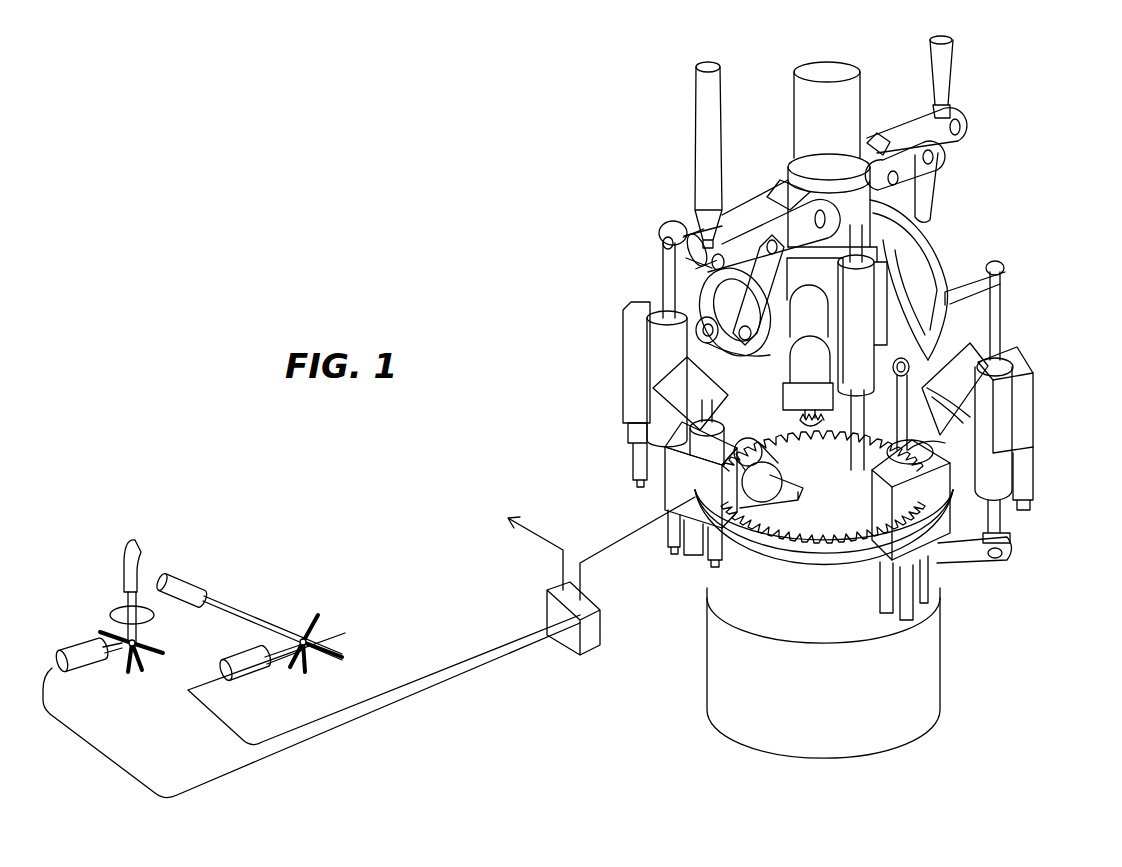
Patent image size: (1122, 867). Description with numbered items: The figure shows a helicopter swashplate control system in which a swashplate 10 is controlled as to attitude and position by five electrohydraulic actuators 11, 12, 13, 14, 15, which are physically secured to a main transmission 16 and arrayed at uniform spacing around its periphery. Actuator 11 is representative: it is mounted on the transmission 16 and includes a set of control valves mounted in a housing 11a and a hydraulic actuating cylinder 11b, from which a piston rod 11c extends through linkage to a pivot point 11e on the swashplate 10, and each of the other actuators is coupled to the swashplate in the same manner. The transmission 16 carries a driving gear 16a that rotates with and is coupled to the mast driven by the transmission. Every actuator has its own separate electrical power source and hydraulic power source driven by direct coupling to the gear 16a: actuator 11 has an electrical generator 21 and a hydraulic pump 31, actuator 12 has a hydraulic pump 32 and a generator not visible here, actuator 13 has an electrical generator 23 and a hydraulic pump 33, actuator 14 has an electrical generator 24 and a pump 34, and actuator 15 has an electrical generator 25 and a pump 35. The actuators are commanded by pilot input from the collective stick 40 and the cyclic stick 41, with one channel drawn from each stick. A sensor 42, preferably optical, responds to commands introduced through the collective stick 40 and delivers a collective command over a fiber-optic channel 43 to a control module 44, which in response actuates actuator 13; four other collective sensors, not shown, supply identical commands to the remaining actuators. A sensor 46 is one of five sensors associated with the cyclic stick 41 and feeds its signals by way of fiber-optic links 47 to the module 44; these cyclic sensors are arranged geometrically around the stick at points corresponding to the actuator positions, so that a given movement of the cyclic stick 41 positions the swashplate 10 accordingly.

The swashplate 10 is at (950, 278).
The electrohydraulic actuator 11 is at (1049, 350).
The housing 11a is at (1031, 408).
The hydraulic actuating cylinder 11b is at (993, 470).
The piston rod 11c is at (1003, 365).
The pivot point 11e is at (1007, 278).
The electrohydraulic actuator 12 is at (931, 525).
The electrohydraulic actuator 13 is at (700, 484).
The electrohydraulic actuator 14 is at (625, 370).
The electrohydraulic actuator 15 is at (880, 247).
The main transmission 16 is at (846, 695).
The driving gear 16a is at (805, 542).
The electrical generator 21 is at (937, 428).
The electrical generator 23 is at (770, 493).
The electrical generator 24 is at (720, 440).
The electrical generator 25 is at (821, 368).
The hydraulic pump 31 is at (967, 389).
The hydraulic pump 32 is at (960, 438).
The hydraulic pump 33 is at (762, 468).
The pump 34 is at (688, 402).
The pump 35 is at (821, 315).
The collective stick 40 is at (187, 585).
The cyclic stick 41 is at (118, 558).
The sensor 42 is at (245, 667).
The fiber-optic channel 43 is at (280, 737).
The control module 44 is at (557, 605).
The sensor 46 is at (83, 647).
The fiber-optic links 47 is at (263, 758).